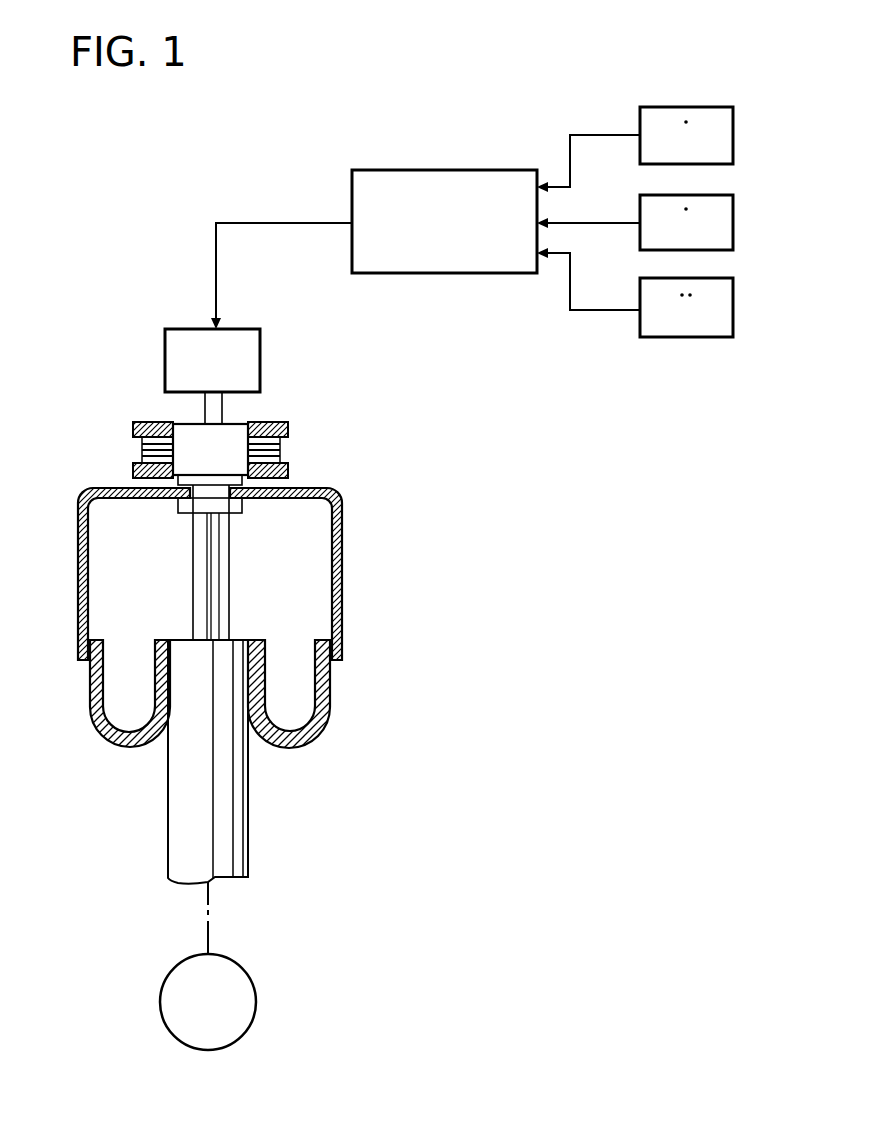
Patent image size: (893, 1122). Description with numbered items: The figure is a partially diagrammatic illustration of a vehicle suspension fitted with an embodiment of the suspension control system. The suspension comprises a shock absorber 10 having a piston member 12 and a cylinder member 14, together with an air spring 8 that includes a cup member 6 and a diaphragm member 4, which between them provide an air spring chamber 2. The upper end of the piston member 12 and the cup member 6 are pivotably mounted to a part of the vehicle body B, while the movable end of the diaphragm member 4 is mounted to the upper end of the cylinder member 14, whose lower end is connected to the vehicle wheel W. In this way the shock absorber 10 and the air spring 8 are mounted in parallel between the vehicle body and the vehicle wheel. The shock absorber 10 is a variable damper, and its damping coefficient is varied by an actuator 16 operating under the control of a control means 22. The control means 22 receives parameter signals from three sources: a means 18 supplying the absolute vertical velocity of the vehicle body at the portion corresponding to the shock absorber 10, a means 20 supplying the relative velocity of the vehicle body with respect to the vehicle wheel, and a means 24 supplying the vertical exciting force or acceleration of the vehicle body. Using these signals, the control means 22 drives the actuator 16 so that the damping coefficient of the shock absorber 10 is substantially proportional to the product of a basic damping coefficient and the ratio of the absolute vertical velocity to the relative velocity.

The air spring chamber 2 is at (312, 610).
The diaphragm member 4 is at (326, 697).
The cup member 6 is at (228, 574).
The air spring 8 is at (202, 574).
The shock absorber 10 is at (152, 800).
The piston member 12 is at (197, 580).
The cylinder member 14 is at (250, 823).
The actuator 16 is at (260, 357).
The absolute vertical velocity detecting means 18 is at (733, 135).
The relative velocity detecting means 20 is at (733, 223).
The control means 22 is at (444, 177).
The vertical acceleration detecting means 24 is at (733, 310).
The vehicle body B is at (133, 428).
The vehicle wheel W is at (170, 992).